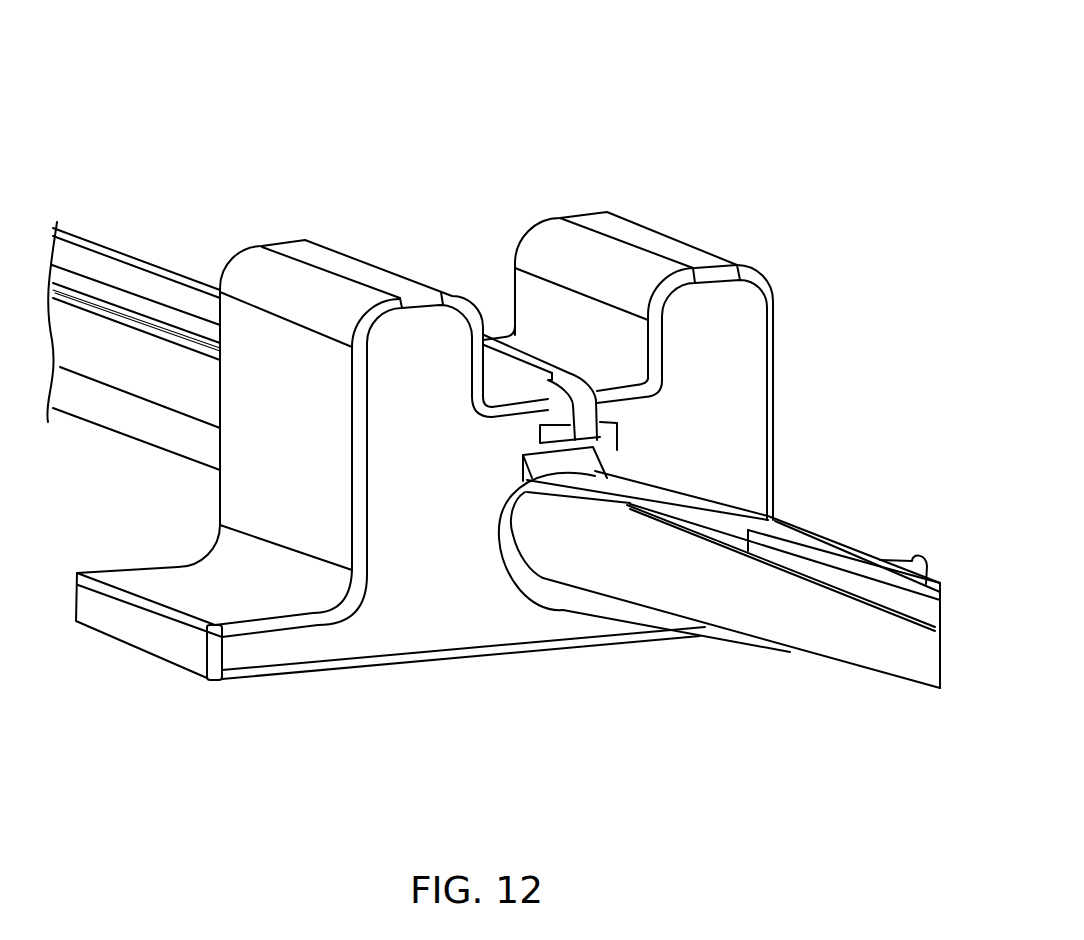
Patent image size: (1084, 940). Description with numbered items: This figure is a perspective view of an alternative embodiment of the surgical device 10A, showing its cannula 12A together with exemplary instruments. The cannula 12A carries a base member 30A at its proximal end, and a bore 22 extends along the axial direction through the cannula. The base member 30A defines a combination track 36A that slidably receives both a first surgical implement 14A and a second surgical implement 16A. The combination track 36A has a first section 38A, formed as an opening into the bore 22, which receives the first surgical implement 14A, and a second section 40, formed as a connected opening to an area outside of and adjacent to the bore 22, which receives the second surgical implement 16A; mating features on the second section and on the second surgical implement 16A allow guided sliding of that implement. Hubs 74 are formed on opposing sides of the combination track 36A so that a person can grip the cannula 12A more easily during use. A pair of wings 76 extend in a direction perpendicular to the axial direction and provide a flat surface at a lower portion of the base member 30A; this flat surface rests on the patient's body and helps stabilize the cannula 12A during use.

The surgical device 10A is at (701, 127).
The cannula 12A is at (718, 327).
The first surgical implement 14A is at (850, 657).
The second surgical implement 16A is at (917, 606).
The bore 22 is at (129, 323).
The base member 30A is at (430, 623).
The combination track 36A is at (503, 591).
The first section 38A is at (551, 582).
The second section 40 is at (566, 462).
The hubs 74 is at (565, 230).
The wings 76 is at (167, 637).